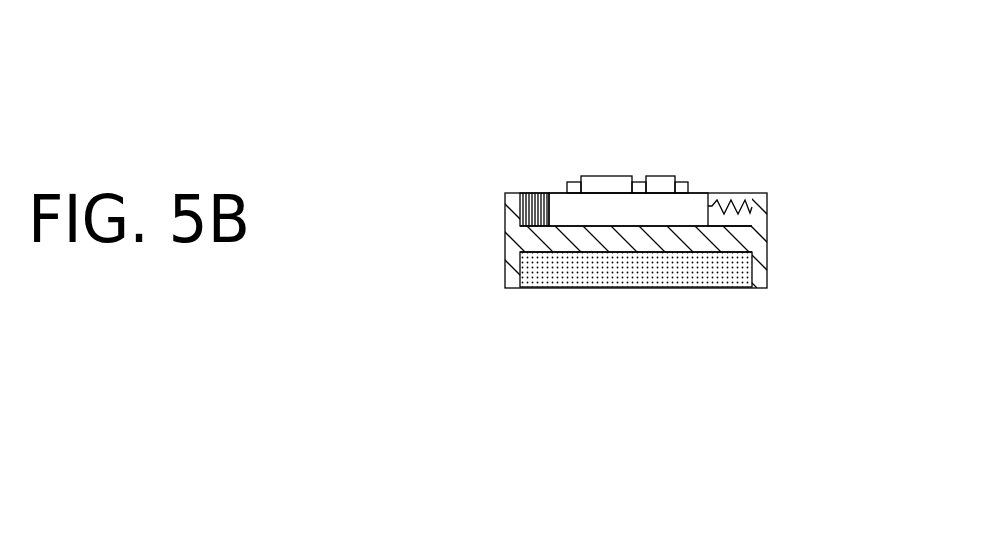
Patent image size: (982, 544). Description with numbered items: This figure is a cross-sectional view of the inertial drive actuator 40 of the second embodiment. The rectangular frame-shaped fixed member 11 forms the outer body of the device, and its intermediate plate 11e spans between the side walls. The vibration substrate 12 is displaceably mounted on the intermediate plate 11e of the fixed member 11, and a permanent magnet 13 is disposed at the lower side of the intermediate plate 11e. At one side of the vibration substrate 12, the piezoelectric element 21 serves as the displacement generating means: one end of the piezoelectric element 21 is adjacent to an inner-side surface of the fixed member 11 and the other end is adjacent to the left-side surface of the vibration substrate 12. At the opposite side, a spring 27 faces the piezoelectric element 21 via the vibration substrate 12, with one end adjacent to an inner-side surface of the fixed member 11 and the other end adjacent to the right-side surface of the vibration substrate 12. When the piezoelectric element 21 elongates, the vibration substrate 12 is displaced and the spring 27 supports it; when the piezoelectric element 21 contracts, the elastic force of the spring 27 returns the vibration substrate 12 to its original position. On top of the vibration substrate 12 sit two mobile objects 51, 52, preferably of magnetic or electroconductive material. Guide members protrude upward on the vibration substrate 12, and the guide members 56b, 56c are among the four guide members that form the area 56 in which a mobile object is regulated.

The inertial drive actuator 40 is at (633, 278).
The fixed member 11 is at (515, 242).
The intermediate plate 11e is at (574, 237).
The vibration substrate 12 is at (688, 205).
The permanent magnet 13 is at (657, 272).
The piezoelectric element 21 is at (532, 203).
The spring 27 is at (753, 205).
The mobile object 51 is at (591, 176).
The mobile object 52 is at (657, 176).
The area 56 is at (635, 182).
The guide member 56b is at (569, 182).
The guide member 56c is at (687, 182).